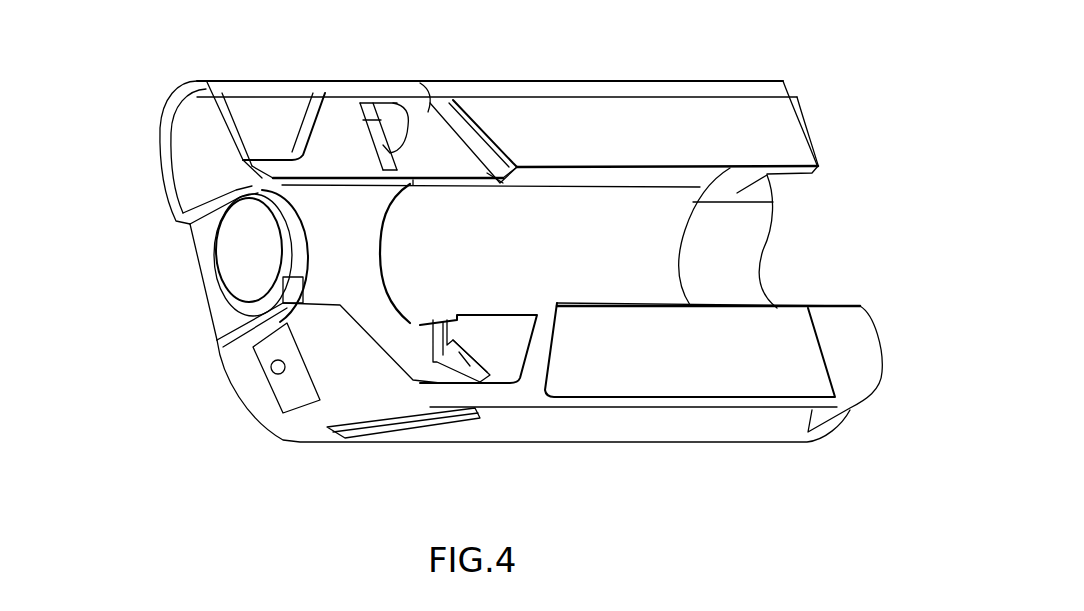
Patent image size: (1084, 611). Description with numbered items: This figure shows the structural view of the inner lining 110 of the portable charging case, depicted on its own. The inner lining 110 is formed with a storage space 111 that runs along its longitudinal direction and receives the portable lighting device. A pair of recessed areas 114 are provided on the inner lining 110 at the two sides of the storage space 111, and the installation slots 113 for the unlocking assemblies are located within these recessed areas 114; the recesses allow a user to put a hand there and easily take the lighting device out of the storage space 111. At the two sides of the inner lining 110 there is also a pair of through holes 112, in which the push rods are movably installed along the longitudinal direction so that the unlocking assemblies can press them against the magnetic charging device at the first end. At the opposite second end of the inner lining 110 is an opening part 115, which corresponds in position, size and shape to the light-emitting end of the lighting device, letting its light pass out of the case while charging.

The inner lining 110 is at (273, 107).
The storage space 111 is at (642, 210).
The through hole 112 is at (463, 363).
The installation slot 113 is at (387, 132).
The recessed area 114 is at (440, 133).
The opening part 115 is at (225, 263).